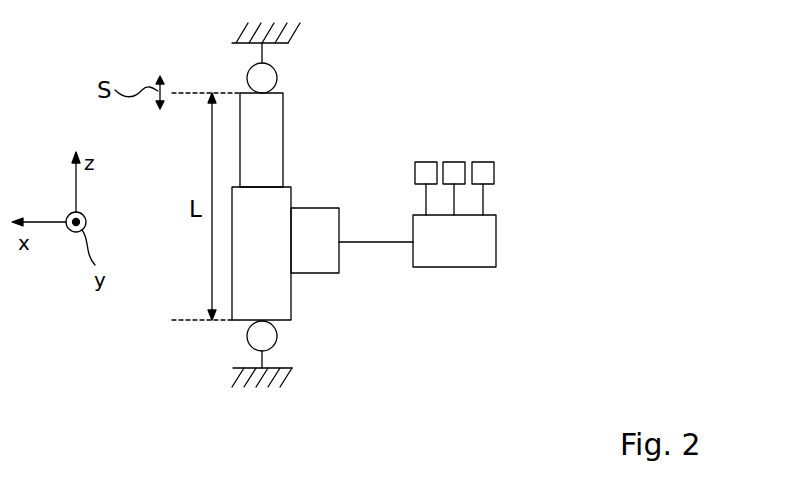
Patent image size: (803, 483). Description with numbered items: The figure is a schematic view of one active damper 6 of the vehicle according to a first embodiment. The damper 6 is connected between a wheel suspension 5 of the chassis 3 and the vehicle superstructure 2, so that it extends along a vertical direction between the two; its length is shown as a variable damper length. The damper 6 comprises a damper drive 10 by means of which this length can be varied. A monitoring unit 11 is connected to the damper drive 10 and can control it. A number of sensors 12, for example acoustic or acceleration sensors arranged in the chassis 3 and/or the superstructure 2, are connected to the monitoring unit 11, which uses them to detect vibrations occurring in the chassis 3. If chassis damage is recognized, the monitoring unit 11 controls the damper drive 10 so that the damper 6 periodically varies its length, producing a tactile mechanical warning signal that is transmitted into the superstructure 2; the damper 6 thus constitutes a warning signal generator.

The vehicle superstructure 2 is at (240, 33).
The chassis 3 is at (298, 381).
The wheel suspension 5 is at (228, 377).
The damper 6 is at (297, 108).
The damper drive 10 is at (316, 214).
The monitoring unit 11 is at (492, 245).
The sensor 12 is at (427, 170).